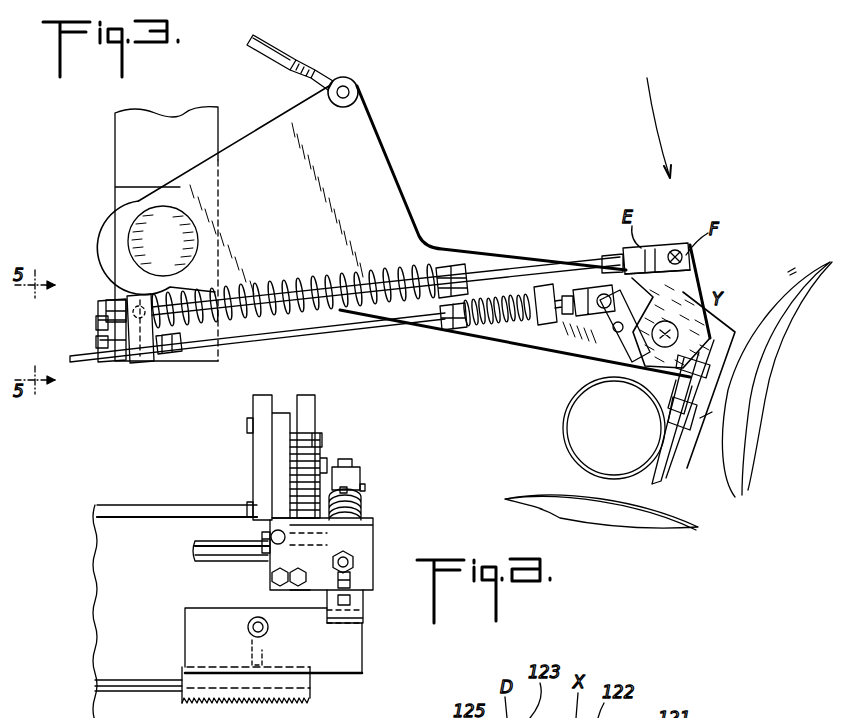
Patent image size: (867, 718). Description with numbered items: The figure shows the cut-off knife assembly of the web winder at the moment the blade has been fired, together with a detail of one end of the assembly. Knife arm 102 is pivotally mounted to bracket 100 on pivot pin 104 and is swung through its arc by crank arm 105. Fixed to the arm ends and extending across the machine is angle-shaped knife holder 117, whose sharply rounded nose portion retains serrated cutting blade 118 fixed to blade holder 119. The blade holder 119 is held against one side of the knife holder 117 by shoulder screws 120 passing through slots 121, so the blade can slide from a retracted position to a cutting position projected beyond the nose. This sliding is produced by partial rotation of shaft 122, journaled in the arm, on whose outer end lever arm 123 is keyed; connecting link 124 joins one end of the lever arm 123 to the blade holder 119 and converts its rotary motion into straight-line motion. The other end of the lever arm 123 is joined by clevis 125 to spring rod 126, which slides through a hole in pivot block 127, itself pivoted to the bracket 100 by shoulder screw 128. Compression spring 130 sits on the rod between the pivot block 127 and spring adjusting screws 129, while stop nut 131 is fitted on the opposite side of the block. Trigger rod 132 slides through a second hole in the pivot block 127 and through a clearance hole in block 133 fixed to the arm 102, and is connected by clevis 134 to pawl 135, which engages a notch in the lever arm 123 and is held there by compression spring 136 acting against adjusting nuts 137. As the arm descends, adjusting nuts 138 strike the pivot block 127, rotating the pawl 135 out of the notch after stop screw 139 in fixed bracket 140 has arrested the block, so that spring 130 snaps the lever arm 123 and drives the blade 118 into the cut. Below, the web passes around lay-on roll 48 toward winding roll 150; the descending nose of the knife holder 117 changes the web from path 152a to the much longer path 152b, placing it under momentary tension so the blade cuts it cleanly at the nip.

In FIG. 3, the lay-on roll 48 is at (535, 500).
In FIG. 3, the bracket 100 is at (122, 169).
In FIG. 3, the knife arm 102 is at (394, 172).
In FIG. 5, the knife arm 102 is at (312, 420).
In FIG. 3, the pivot pin 104 is at (170, 241).
In FIG. 3, the crank arm 105 is at (292, 50).
In FIG. 3, the knife holder 117 is at (722, 322).
In FIG. 5, the knife holder 117 is at (125, 510).
In FIG. 3, the serrated cutting blade 118 is at (655, 483).
In FIG. 5, the serrated cutting blade 118 is at (305, 695).
In FIG. 3, the blade holder 119 is at (668, 430).
In FIG. 5, the blade holder 119 is at (345, 650).
In FIG. 3, the shoulder screws 120 is at (678, 420).
In FIG. 5, the shoulder screws 120 is at (247, 627).
In FIG. 5, the slots 121 is at (250, 652).
In FIG. 3, the shaft 122 is at (676, 327).
In FIG. 5, the shaft 122 is at (203, 540).
In FIG. 3, the lever arm 123 is at (690, 300).
In FIG. 3, the connecting link 124 is at (700, 398).
In FIG. 5, the connecting link 124 is at (360, 603).
In FIG. 3, the clevis 125 is at (660, 246).
In FIG. 5, the clevis 125 is at (360, 478).
In FIG. 3, the spring rod 126 is at (500, 268).
In FIG. 5, the spring rod 126 is at (348, 490).
In FIG. 3, the pivot block 127 is at (152, 354).
In FIG. 5, the pivot block 127 is at (360, 530).
In FIG. 3, the shoulder screw 128 is at (129, 363).
In FIG. 5, the shoulder screw 128 is at (265, 538).
In FIG. 3, the spring adjusting screws 129 is at (452, 265).
In FIG. 3, the compression spring 130 is at (272, 276).
In FIG. 5, the compression spring 130 is at (362, 503).
In FIG. 3, the stop nut 131 is at (116, 300).
In FIG. 5, the stop nut 131 is at (355, 560).
In FIG. 3, the trigger rod 132 is at (360, 330).
In FIG. 5, the trigger rod 132 is at (355, 580).
In FIG. 3, the block 133 is at (546, 325).
In FIG. 3, the clevis 134 is at (573, 290).
In FIG. 3, the pawl 135 is at (606, 350).
In FIG. 3, the compression spring 136 is at (505, 326).
In FIG. 3, the adjusting nuts 137 is at (456, 330).
In FIG. 3, the adjusting nuts 138 is at (170, 352).
In FIG. 3, the stop screw 139 is at (100, 345).
In FIG. 5, the stop screw 139 is at (290, 588).
In FIG. 3, the fixed bracket 140 is at (104, 325).
In FIG. 5, the fixed bracket 140 is at (270, 578).
In FIG. 3, the winding roll 150 is at (735, 455).
In FIG. 3, the web path 152a is at (790, 272).
In FIG. 3, the web path 152b is at (702, 417).